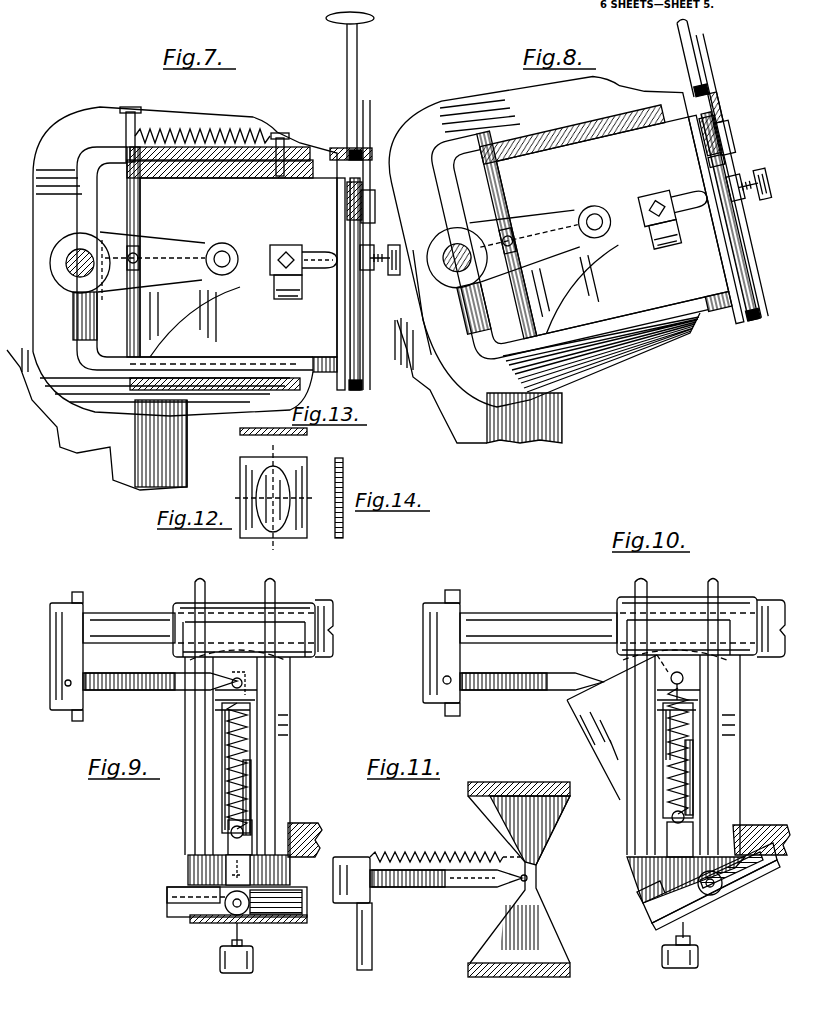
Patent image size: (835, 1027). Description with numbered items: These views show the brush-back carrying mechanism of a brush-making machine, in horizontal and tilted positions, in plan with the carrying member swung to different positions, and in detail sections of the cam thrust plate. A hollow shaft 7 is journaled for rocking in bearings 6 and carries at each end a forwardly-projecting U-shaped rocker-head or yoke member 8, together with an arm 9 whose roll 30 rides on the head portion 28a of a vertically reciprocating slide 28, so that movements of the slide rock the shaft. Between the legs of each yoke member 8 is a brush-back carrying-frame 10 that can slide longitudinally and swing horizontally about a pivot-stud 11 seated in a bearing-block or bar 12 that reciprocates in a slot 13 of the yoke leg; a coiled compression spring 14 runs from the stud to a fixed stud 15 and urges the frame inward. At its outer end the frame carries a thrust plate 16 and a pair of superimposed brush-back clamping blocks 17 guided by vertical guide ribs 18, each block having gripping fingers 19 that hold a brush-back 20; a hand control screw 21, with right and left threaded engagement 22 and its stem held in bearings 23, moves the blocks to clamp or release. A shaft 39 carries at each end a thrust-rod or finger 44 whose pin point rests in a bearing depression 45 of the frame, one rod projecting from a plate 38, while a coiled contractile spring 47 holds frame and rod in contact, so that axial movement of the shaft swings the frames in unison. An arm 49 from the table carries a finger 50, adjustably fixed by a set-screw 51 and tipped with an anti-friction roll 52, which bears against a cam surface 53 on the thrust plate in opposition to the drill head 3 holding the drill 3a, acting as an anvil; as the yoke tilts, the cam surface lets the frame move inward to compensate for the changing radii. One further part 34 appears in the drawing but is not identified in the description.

In FIG. 7, the drill head 3 is at (401, 250).
In FIG. 8, the drill head 3 is at (782, 241).
In FIG. 9, the drill head 3 is at (234, 970).
In FIG. 10, the drill head 3 is at (683, 965).
In FIG. 7, the drill 3a is at (385, 262).
In FIG. 8, the drill 3a is at (757, 290).
In FIG. 9, the drill 3a is at (233, 933).
In FIG. 10, the drill 3a is at (685, 931).
In FIG. 9, the bearings 6 is at (327, 628).
In FIG. 10, the bearings 6 is at (773, 610).
In FIG. 9, the hollow shaft 7 is at (294, 606).
In FIG. 10, the hollow shaft 7 is at (733, 603).
In FIG. 7, the rocker-head or yoke member 8 is at (179, 261).
In FIG. 8, the rocker-head or yoke member 8 is at (553, 227).
In FIG. 9, the rocker-head or yoke member 8 is at (263, 707).
In FIG. 10, the rocker-head or yoke member 8 is at (703, 689).
In FIG. 7, the arm 9 is at (139, 286).
In FIG. 8, the arm 9 is at (519, 266).
In FIG. 7, the brush-back carrying-frame 10 is at (235, 352).
In FIG. 8, the brush-back carrying-frame 10 is at (612, 226).
In FIG. 9, the brush-back carrying-frame 10 is at (198, 872).
In FIG. 10, the brush-back carrying-frame 10 is at (656, 779).
In FIG. 11, the brush-back carrying-frame 10 is at (537, 941).
In FIG. 7, the pivot-stud 11 is at (282, 142).
In FIG. 9, the pivot-stud 11 is at (244, 830).
In FIG. 10, the pivot-stud 11 is at (687, 818).
In FIG. 7, the bearing-block or bar 12 is at (260, 164).
In FIG. 8, the bearing-block or bar 12 is at (667, 107).
In FIG. 9, the bearing-block or bar 12 is at (251, 794).
In FIG. 10, the bearing-block or bar 12 is at (691, 790).
In FIG. 7, the slot 13 is at (212, 150).
In FIG. 9, the slot 13 is at (223, 758).
In FIG. 10, the slot 13 is at (692, 713).
In FIG. 7, the coiled compression spring 14 is at (195, 126).
In FIG. 9, the coiled compression spring 14 is at (248, 751).
In FIG. 10, the coiled compression spring 14 is at (684, 751).
In FIG. 7, the stud 15 is at (130, 125).
In FIG. 10, the stud 15 is at (680, 677).
In FIG. 7, the thrust plate 16 is at (337, 333).
In FIG. 8, the thrust plate 16 is at (690, 171).
In FIG. 13, the thrust plate 16 is at (240, 433).
In FIG. 12, the thrust plate 16 is at (242, 478).
In FIG. 14, the thrust plate 16 is at (343, 478).
In FIG. 9, the thrust plate 16 is at (293, 891).
In FIG. 10, the thrust plate 16 is at (657, 900).
In FIG. 7, the brush-back clamping blocks 17 is at (337, 366).
In FIG. 8, the brush-back clamping blocks 17 is at (711, 169).
In FIG. 9, the brush-back clamping blocks 17 is at (187, 923).
In FIG. 10, the brush-back clamping blocks 17 is at (758, 870).
In FIG. 8, the vertical guide ribs 18 is at (707, 199).
In FIG. 9, the vertical guide ribs 18 is at (183, 903).
In FIG. 10, the vertical guide ribs 18 is at (670, 913).
In FIG. 7, the gripping fingers 19 is at (371, 205).
In FIG. 8, the gripping fingers 19 is at (721, 131).
In FIG. 7, the brush-back 20 is at (371, 251).
In FIG. 8, the brush-back 20 is at (734, 188).
In FIG. 9, the brush-back 20 is at (263, 924).
In FIG. 10, the brush-back 20 is at (740, 891).
In FIG. 7, the hand control screw 21 is at (358, 76).
In FIG. 8, the hand control screw 21 is at (680, 61).
In FIG. 7, the threaded engagement 22 is at (361, 163).
In FIG. 7, the bearings 23 is at (356, 152).
In FIG. 8, the bearings 23 is at (700, 98).
In FIG. 7, the slide 28 is at (97, 420).
In FIG. 8, the slide 28 is at (479, 381).
In FIG. 7, the head portion 28a is at (193, 322).
In FIG. 8, the head portion 28a is at (557, 285).
In FIG. 7, the roll 30 is at (233, 247).
In FIG. 8, the roll 30 is at (603, 213).
In FIG. 7, the pivot bushing 34 is at (75, 270).
In FIG. 9, the plate 38 is at (58, 668).
In FIG. 10, the plate 38 is at (433, 668).
In FIG. 11, the plate 38 is at (370, 941).
In FIG. 8, the shaft 39 is at (457, 258).
In FIG. 9, the shaft 39 is at (123, 623).
In FIG. 10, the shaft 39 is at (523, 623).
In FIG. 8, the thrust-rod or finger 44 is at (647, 277).
In FIG. 9, the thrust-rod or finger 44 is at (128, 690).
In FIG. 10, the thrust-rod or finger 44 is at (520, 690).
In FIG. 11, the thrust-rod or finger 44 is at (431, 887).
In FIG. 7, the bearing depression 45 is at (135, 256).
In FIG. 8, the bearing depression 45 is at (500, 243).
In FIG. 9, the bearing depression 45 is at (238, 683).
In FIG. 11, the bearing depression 45 is at (530, 876).
In FIG. 11, the coiled contractile spring 47 is at (412, 853).
In FIG. 7, the arm 49 is at (287, 296).
In FIG. 9, the arm 49 is at (304, 834).
In FIG. 10, the arm 49 is at (767, 823).
In FIG. 7, the finger 50 is at (323, 268).
In FIG. 8, the finger 50 is at (678, 255).
In FIG. 7, the set-screw 51 is at (286, 247).
In FIG. 8, the set-screw 51 is at (657, 208).
In FIG. 7, the anti-friction roll 52 is at (316, 254).
In FIG. 8, the anti-friction roll 52 is at (690, 200).
In FIG. 7, the cam surface 53 is at (345, 213).
In FIG. 8, the cam surface 53 is at (713, 241).
In FIG. 12, the cam surface 53 is at (333, 470).